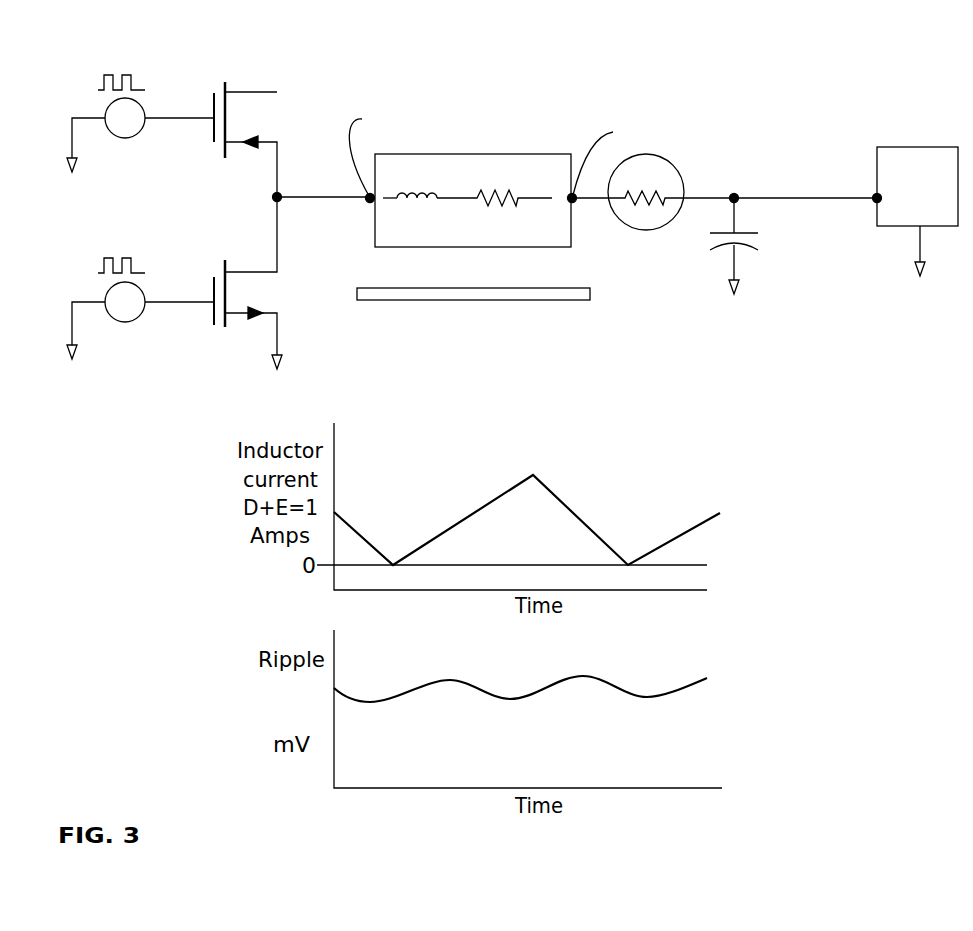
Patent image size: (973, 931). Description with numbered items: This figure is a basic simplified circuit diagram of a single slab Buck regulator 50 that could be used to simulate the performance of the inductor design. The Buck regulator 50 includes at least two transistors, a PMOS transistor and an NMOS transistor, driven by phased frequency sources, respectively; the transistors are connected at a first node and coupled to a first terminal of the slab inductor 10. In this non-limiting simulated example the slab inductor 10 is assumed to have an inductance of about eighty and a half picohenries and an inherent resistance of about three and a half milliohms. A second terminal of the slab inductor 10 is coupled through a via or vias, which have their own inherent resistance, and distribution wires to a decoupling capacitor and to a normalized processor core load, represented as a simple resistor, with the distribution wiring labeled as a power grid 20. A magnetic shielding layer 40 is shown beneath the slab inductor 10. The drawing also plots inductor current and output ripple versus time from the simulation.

The slab inductor 10 is at (552, 248).
The power grid 20 is at (846, 216).
The magnetic shielding layer 40 is at (473, 325).
The Buck regulator 50 is at (530, 132).